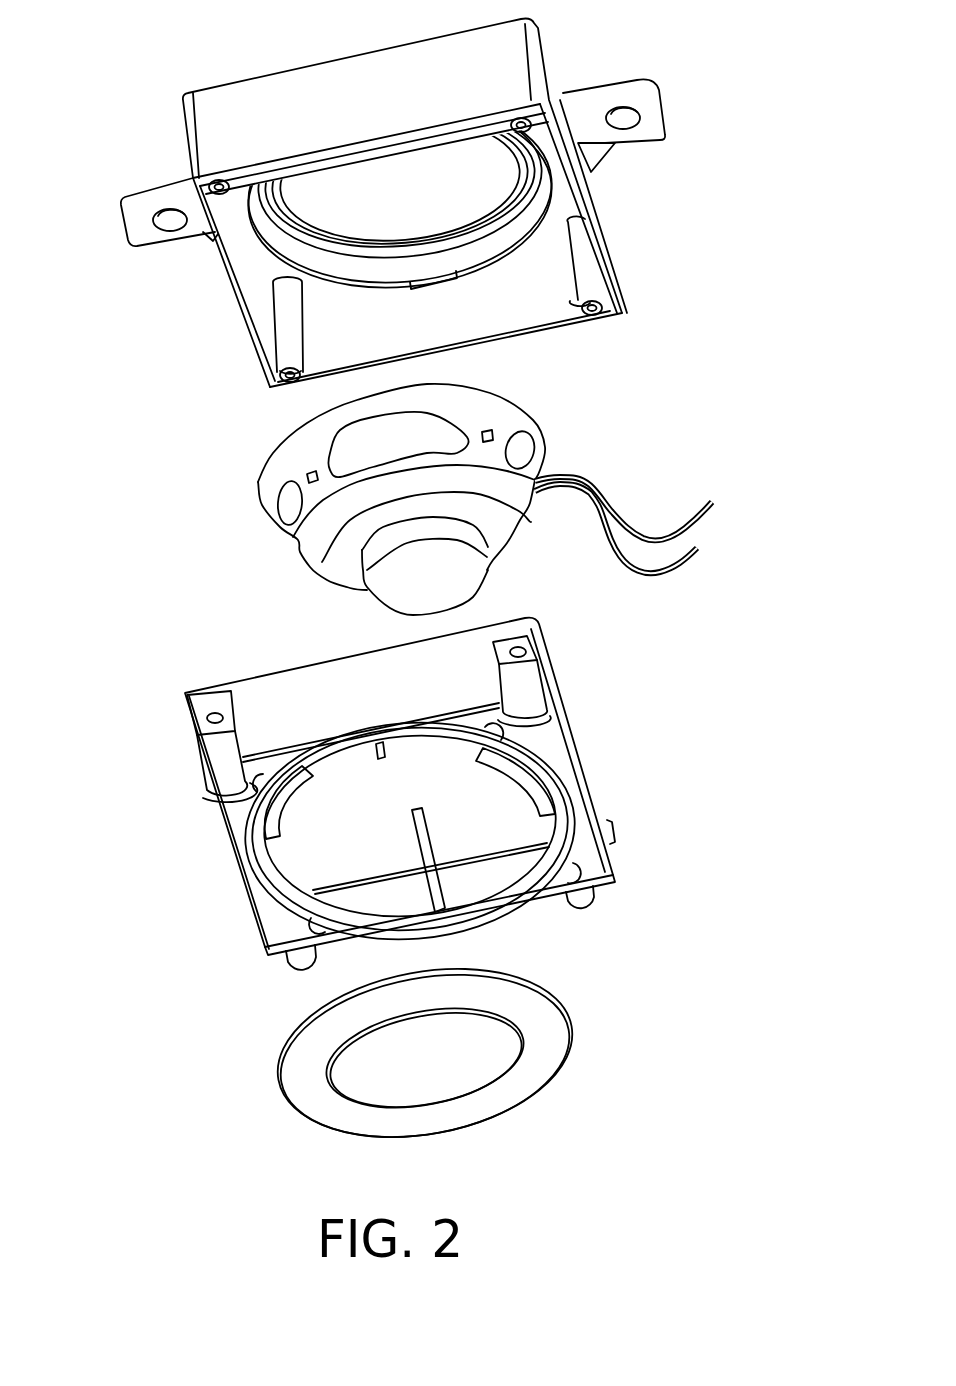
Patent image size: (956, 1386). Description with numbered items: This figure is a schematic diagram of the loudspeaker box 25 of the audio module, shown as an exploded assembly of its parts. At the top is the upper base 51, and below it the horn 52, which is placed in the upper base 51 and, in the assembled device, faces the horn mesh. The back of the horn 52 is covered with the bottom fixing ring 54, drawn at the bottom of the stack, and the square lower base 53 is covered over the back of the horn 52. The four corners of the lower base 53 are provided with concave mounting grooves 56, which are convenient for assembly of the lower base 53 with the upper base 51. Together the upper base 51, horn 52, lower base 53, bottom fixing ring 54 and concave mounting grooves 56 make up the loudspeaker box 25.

The loudspeaker box 25 is at (137, 80).
The upper base 51 is at (366, 207).
The horn 52 is at (404, 499).
The lower base 53 is at (337, 794).
The bottom fixing ring 54 is at (349, 1052).
The concave mounting grooves 56 is at (143, 746).